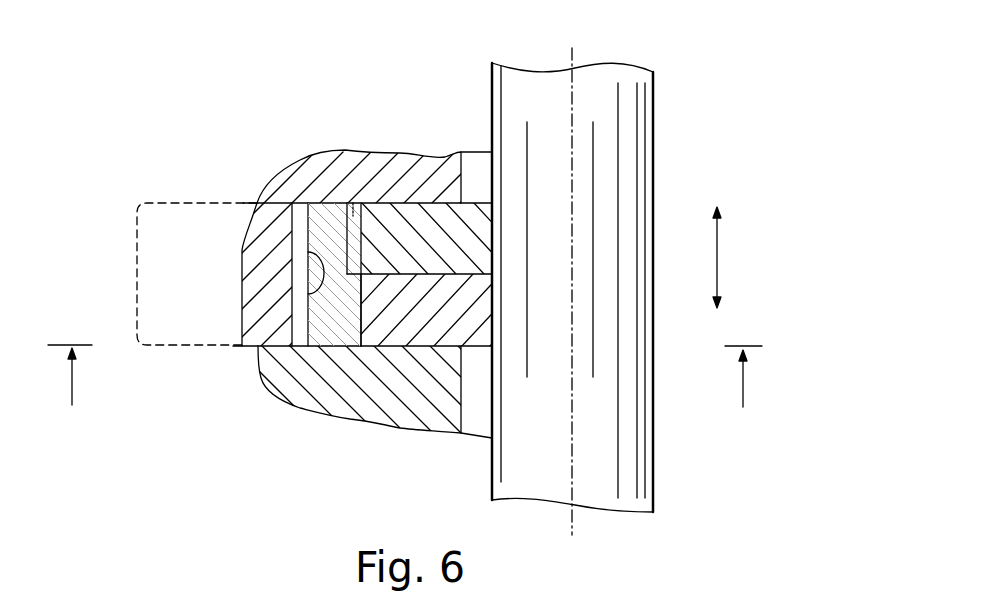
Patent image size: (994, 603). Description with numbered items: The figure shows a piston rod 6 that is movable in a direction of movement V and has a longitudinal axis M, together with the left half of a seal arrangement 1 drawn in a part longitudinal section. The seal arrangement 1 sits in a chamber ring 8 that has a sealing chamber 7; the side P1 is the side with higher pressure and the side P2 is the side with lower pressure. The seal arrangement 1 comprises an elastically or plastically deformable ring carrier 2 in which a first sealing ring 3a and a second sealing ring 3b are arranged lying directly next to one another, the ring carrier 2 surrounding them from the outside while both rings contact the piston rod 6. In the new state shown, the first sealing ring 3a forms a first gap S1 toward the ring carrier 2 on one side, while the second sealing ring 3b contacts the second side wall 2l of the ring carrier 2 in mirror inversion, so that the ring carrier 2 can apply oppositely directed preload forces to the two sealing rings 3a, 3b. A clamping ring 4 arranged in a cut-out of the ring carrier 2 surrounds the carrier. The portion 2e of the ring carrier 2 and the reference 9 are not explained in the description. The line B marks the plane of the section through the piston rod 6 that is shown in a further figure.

The seal arrangement 1 is at (137, 266).
The ring carrier 2 is at (326, 326).
The piston end 2e is at (350, 240).
The second side wall 2l is at (363, 314).
The first sealing ring 3a is at (407, 232).
The second sealing ring 3b is at (443, 322).
The clamping ring 4 is at (306, 266).
The piston rod 6 is at (658, 117).
The sealing chamber 7 is at (300, 336).
The chamber ring 8 is at (298, 185).
The bearing arrangement 9 is at (416, 78).
The longitudinal axis M is at (572, 50).
The side with higher pressure P1 is at (473, 159).
The side with lower pressure P2 is at (473, 414).
The first gap S1 is at (352, 203).
The direction of movement V is at (728, 257).
The section line B- B is at (407, 390).